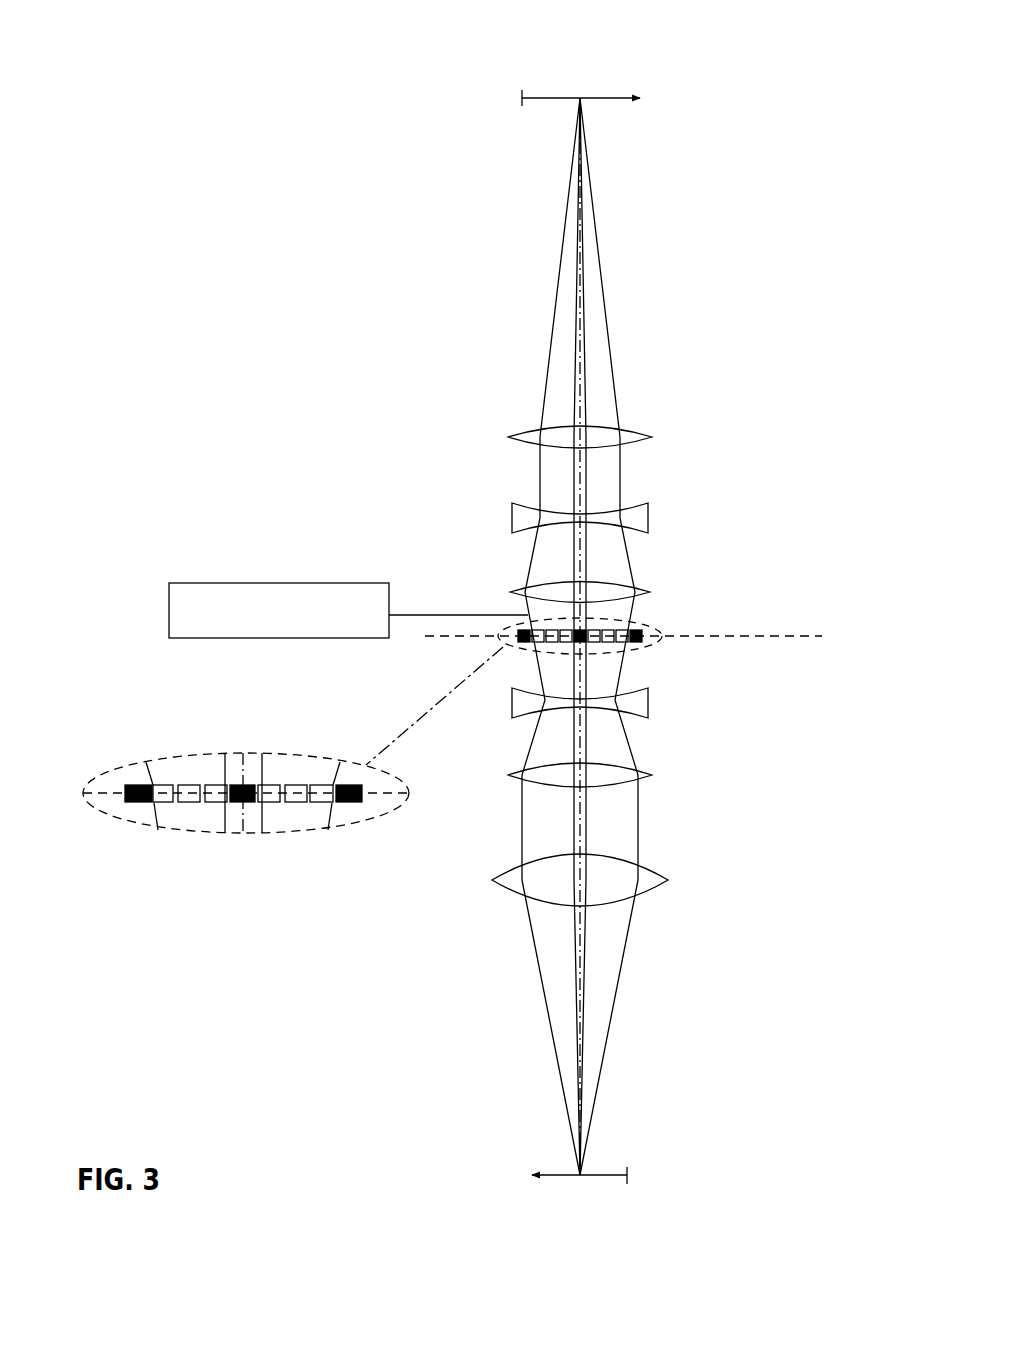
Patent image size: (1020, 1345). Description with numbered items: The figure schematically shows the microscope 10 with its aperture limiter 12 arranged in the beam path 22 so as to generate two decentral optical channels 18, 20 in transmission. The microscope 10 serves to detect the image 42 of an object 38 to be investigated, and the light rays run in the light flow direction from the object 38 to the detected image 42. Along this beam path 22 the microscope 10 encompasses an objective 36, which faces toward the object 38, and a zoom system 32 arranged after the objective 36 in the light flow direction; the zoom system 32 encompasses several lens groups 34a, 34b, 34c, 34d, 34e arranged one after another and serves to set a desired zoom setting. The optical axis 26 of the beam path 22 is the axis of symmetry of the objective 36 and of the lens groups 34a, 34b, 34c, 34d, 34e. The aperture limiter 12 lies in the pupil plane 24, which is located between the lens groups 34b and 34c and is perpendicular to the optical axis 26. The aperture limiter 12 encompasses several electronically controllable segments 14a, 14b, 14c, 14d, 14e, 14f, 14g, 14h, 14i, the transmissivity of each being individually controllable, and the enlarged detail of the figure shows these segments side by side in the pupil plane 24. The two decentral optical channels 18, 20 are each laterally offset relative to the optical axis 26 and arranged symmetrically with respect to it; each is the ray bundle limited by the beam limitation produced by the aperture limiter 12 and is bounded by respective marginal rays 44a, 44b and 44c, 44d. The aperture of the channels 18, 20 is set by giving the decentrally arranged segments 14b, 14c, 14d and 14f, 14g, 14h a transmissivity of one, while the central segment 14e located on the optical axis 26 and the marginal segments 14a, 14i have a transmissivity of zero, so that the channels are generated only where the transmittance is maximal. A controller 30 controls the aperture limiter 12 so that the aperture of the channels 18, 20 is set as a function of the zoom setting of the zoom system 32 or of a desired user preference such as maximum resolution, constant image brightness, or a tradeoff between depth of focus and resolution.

The microscope 10 is at (318, 90).
The aperture limiter 12 is at (688, 642).
The marginal segment 14a is at (633, 625).
The electronically controllable segment 14b is at (618, 644).
The electronically controllable segment 14c is at (617, 650).
The electronically controllable segment 14d is at (270, 800).
The central segment 14e is at (237, 800).
The electronically controllable segment 14f is at (215, 800).
The electronically controllable segment 14g is at (190, 800).
The electronically controllable segment 14h is at (165, 800).
The marginal segment 14i is at (517, 648).
The decentral optical channel 18 is at (520, 607).
The decentral optical channel 20 is at (642, 610).
The beam path 22 is at (658, 993).
The pupil plane 24 is at (803, 637).
The optical axis 26 is at (583, 1095).
The controller 30 is at (330, 638).
The zoom system 32 is at (417, 437).
The lens group 34a is at (650, 775).
The lens group 34b is at (648, 717).
The lens group 34c is at (650, 592).
The lens group 34d is at (650, 508).
The lens group 34e is at (650, 432).
The objective 36 is at (667, 885).
The object to be investigated 38 is at (537, 1175).
The detected image 42 is at (550, 97).
The marginal ray 44a is at (553, 306).
The marginal ray 44b is at (609, 489).
The marginal ray 44c is at (586, 290).
The marginal ray 44d is at (583, 489).